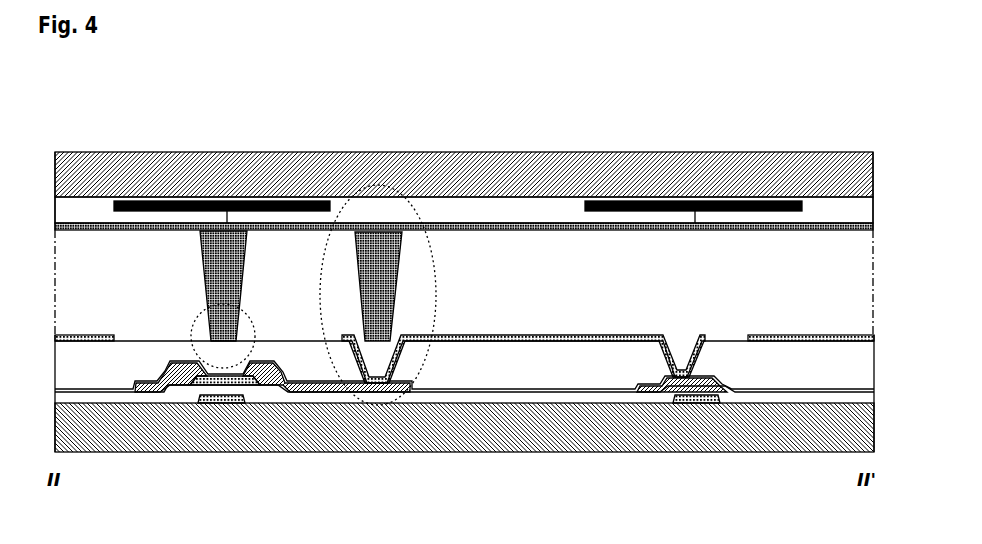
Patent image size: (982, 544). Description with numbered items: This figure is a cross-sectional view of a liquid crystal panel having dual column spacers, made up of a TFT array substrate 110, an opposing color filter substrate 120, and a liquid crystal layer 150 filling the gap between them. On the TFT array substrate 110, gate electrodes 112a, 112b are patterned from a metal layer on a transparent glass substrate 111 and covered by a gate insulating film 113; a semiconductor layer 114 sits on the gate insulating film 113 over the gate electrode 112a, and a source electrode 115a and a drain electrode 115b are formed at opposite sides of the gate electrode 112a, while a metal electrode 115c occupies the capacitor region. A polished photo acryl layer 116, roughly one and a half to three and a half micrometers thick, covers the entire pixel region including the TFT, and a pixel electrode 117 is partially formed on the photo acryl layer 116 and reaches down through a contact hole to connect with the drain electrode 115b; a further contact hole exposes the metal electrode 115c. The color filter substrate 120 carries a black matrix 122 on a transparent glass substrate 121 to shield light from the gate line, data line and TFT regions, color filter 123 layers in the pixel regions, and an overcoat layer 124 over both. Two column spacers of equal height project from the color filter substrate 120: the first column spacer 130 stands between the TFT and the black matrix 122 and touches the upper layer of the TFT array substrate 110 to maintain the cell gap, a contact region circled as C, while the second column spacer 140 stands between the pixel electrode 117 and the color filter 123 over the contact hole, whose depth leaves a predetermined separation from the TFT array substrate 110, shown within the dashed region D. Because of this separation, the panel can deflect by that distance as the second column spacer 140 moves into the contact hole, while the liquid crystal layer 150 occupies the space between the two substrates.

The TFT array substrate 110 is at (464, 404).
The transparent glass substrate 111 is at (385, 452).
The gate electrode 112a is at (224, 405).
The gate electrode 112b is at (702, 404).
The gate insulating film 113 is at (570, 404).
The semiconductor layer 114 is at (190, 388).
The source electrode 115a is at (157, 392).
The drain electrode 115b is at (290, 392).
The metal electrode 115c is at (703, 378).
The photo acryl layer 116 is at (75, 390).
The pixel electrode 117 is at (80, 335).
The color filter substrate 120 is at (464, 185).
The transparent glass substrate 121 is at (348, 152).
The black matrix 122 is at (227, 202).
The color filter 123 is at (532, 210).
The overcoat layer 124 is at (723, 231).
The first column spacer 130 is at (243, 270).
The second column spacer 140 is at (403, 253).
The liquid crystal layer 150 is at (628, 293).
The region C (spacer contact region) C is at (197, 322).
The region D (spacer over contact hole) D is at (318, 284).